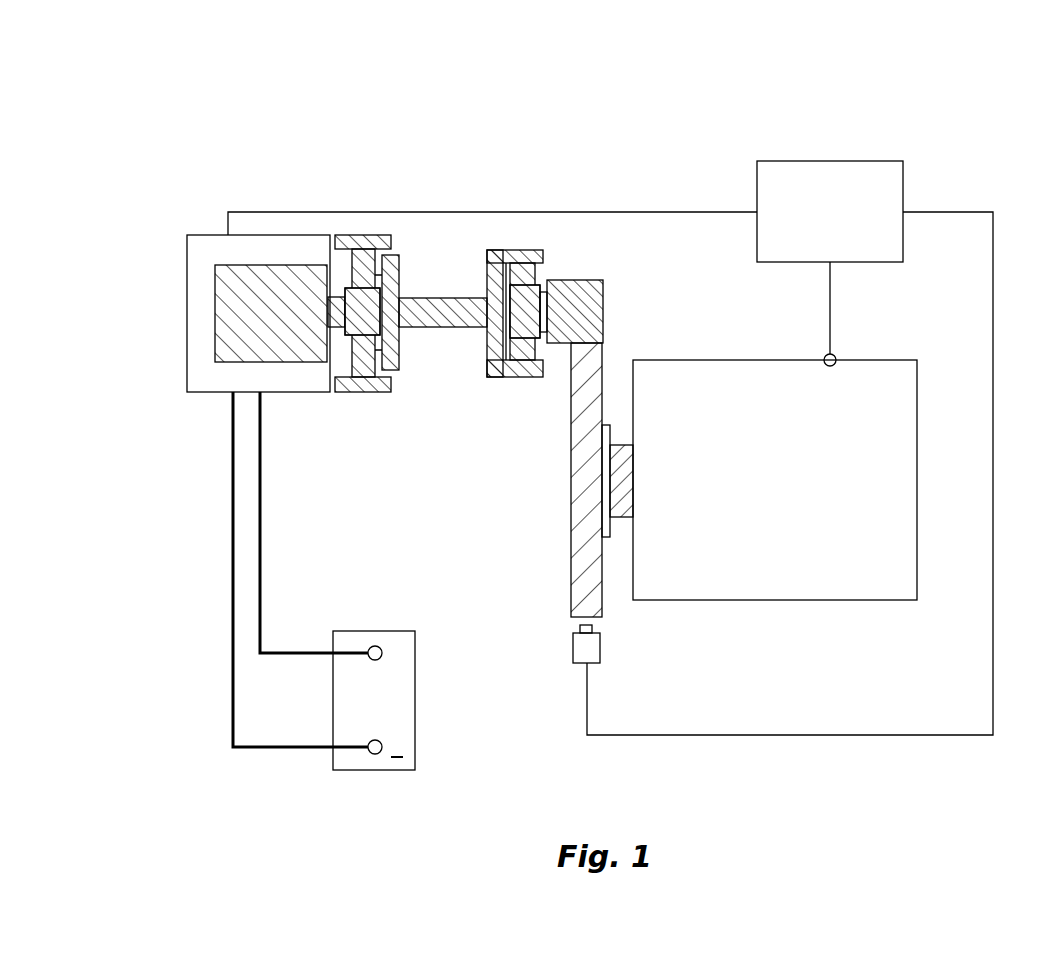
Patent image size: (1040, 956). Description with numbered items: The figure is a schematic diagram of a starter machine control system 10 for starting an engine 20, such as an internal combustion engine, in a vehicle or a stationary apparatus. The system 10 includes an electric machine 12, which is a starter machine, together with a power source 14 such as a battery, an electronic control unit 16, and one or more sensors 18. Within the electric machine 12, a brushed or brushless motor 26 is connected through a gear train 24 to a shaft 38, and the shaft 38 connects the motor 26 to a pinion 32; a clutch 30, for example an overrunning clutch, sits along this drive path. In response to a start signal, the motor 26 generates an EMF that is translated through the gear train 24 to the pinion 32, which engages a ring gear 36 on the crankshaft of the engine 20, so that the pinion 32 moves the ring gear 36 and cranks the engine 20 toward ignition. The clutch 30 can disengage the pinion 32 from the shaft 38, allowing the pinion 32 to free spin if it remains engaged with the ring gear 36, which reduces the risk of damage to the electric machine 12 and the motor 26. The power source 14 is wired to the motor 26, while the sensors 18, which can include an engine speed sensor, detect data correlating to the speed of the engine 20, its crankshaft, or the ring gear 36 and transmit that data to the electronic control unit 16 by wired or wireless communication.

The starter machine control system 10 is at (982, 132).
The electric machine 12 is at (441, 238).
The power source 14 is at (415, 722).
The electronic control unit 16 is at (858, 161).
The sensors 18 is at (836, 355).
The engine 20 is at (905, 397).
The gear train 24 is at (363, 238).
The motor 26 is at (282, 280).
The clutch 30 is at (516, 250).
The pinion 32 is at (588, 280).
The ring gear 36 is at (574, 519).
The shaft 38 is at (440, 322).